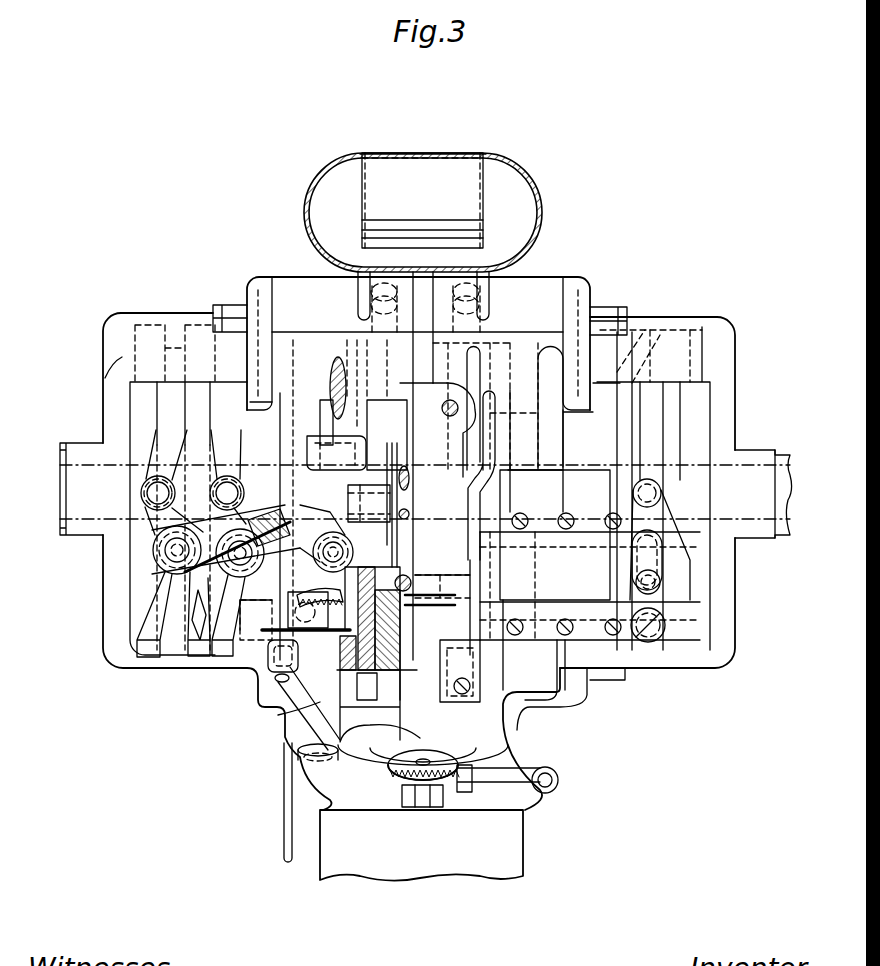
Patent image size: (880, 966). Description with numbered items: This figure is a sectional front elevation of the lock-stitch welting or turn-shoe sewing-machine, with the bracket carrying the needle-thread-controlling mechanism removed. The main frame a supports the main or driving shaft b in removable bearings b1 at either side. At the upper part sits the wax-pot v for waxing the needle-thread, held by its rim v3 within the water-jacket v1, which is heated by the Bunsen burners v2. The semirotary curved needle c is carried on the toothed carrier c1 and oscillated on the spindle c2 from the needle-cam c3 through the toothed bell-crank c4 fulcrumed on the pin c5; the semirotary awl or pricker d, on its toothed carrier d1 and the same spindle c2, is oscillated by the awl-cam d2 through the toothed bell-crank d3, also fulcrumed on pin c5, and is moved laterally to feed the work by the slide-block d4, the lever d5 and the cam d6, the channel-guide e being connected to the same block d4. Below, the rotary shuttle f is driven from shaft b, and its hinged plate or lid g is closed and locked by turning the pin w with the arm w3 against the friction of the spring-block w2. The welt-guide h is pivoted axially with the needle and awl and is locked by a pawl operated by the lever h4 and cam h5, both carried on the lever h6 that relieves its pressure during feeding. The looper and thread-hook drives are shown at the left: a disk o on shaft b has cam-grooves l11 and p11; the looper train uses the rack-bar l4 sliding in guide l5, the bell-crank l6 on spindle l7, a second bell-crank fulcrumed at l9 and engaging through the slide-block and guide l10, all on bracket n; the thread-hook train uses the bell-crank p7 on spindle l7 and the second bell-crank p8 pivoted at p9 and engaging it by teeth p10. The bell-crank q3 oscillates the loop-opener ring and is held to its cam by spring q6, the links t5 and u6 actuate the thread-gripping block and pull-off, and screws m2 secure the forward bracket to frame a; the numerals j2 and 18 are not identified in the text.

The wax-pot v is at (422, 200).
The water-jacket v1 is at (540, 214).
The rim v3 is at (490, 153).
The Bunsen burners v2 is at (385, 355).
The pin j2 is at (338, 357).
The cam h5 is at (326, 412).
The lever h6 is at (387, 420).
The lever h4 is at (318, 470).
The screws m2 is at (448, 414).
The connecting rod or link t5 is at (410, 480).
The connecting rod or link u6 is at (410, 514).
The pin c5 is at (258, 398).
The toothed bell-crank c4 is at (465, 550).
The needle-cam c3 is at (555, 535).
The spindle c2 is at (365, 720).
The toothed carrier c1 is at (449, 668).
The semirotary curved needle c is at (380, 738).
The awl-cam d2 is at (590, 559).
The toothed bell-crank d3 is at (485, 590).
The slide-block d4 is at (620, 540).
The lever d5 is at (660, 500).
The cam d6 is at (660, 445).
The toothed carrier d1 is at (455, 600).
The semirotary awl or pricker d is at (470, 715).
The main or driving shaft b is at (782, 532).
The removable bearings b1 is at (84, 535).
The cam-groove l11 is at (172, 482).
The cam-groove p11 is at (229, 477).
The slide-block and guide l10 is at (262, 502).
The second bell-crank p8 is at (210, 512).
The pin 18 is at (200, 535).
The fulcrum l9 is at (169, 591).
The pivot p9 is at (193, 614).
The bracket n is at (240, 565).
The teeth p10 is at (237, 558).
The bell-crank l6 is at (305, 598).
The spindle l7 is at (333, 538).
The rack-bar l4 is at (252, 612).
The guide l5 is at (268, 640).
The bell-crank p7 is at (338, 640).
The welt-guide h is at (392, 600).
The disk o is at (152, 658).
The bell-crank q3 is at (297, 708).
The spring q6 is at (283, 838).
The channel-guide e is at (423, 752).
The rotary shuttle f is at (380, 760).
The hinged plate or lid g is at (400, 780).
The pin w is at (472, 786).
The spring-block w2 is at (426, 806).
The arm w3 is at (558, 780).
The main frame a is at (524, 832).